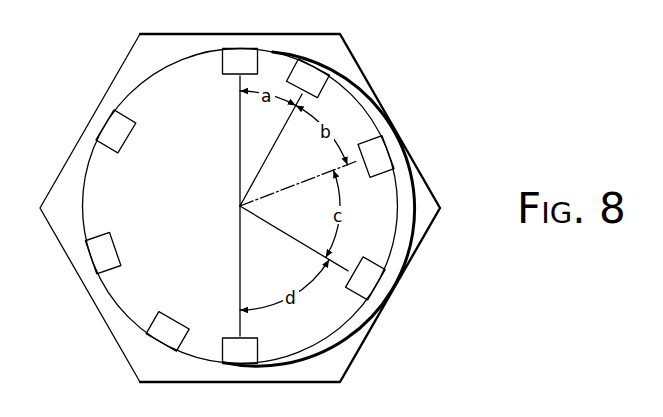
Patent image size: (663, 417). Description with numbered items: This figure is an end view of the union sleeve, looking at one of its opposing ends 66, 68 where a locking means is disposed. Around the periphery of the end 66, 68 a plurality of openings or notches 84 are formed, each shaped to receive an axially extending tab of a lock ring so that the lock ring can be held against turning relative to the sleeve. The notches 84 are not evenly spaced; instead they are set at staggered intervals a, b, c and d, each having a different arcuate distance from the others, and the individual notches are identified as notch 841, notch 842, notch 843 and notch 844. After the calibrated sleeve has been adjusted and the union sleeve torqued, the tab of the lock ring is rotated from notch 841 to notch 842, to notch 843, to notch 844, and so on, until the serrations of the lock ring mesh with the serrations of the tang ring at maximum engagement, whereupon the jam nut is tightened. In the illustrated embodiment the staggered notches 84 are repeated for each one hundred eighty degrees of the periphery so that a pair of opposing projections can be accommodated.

The end of union sleeve 66 is at (234, 208).
The end of union sleeve 68 is at (119, 70).
The notch 84 is at (114, 118).
The notch 841 is at (248, 48).
The notch 842 is at (329, 73).
The notch 843 is at (388, 163).
The notch 844 is at (363, 290).